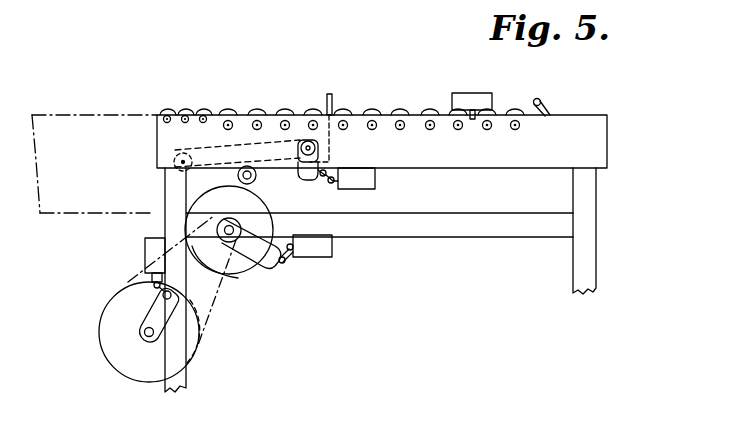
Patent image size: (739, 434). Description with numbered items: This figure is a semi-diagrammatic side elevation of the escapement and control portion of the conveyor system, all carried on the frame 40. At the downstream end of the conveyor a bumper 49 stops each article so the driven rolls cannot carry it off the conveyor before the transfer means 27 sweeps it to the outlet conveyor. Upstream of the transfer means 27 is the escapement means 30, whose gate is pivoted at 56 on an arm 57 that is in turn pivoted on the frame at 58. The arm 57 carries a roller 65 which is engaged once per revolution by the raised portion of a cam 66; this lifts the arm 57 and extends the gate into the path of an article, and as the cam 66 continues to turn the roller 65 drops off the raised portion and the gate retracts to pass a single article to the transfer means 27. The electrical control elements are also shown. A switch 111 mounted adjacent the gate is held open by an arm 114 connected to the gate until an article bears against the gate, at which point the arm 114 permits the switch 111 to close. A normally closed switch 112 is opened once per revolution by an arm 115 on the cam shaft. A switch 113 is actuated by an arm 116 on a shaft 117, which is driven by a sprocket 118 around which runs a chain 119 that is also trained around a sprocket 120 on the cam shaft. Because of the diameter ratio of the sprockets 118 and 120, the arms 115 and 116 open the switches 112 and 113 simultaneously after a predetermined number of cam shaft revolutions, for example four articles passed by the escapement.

The transfer means 27 is at (478, 94).
The escapement means 30 is at (335, 97).
The frame 40 is at (167, 396).
The bumper 49 is at (543, 100).
The gate pivot 56 is at (305, 140).
The arm 57 is at (210, 145).
The arm pivot 58 is at (174, 160).
The roller 65 is at (244, 166).
The cam 66 is at (206, 204).
The switch 111 is at (375, 178).
The switch 112 is at (333, 248).
The switch 113 is at (145, 261).
The arm 114 is at (306, 178).
The arm 115 is at (270, 265).
The arm 116 is at (145, 312).
The shaft 117 is at (104, 342).
The sprocket 118 is at (204, 350).
The chain 119 is at (218, 318).
The sprocket 120 is at (234, 276).